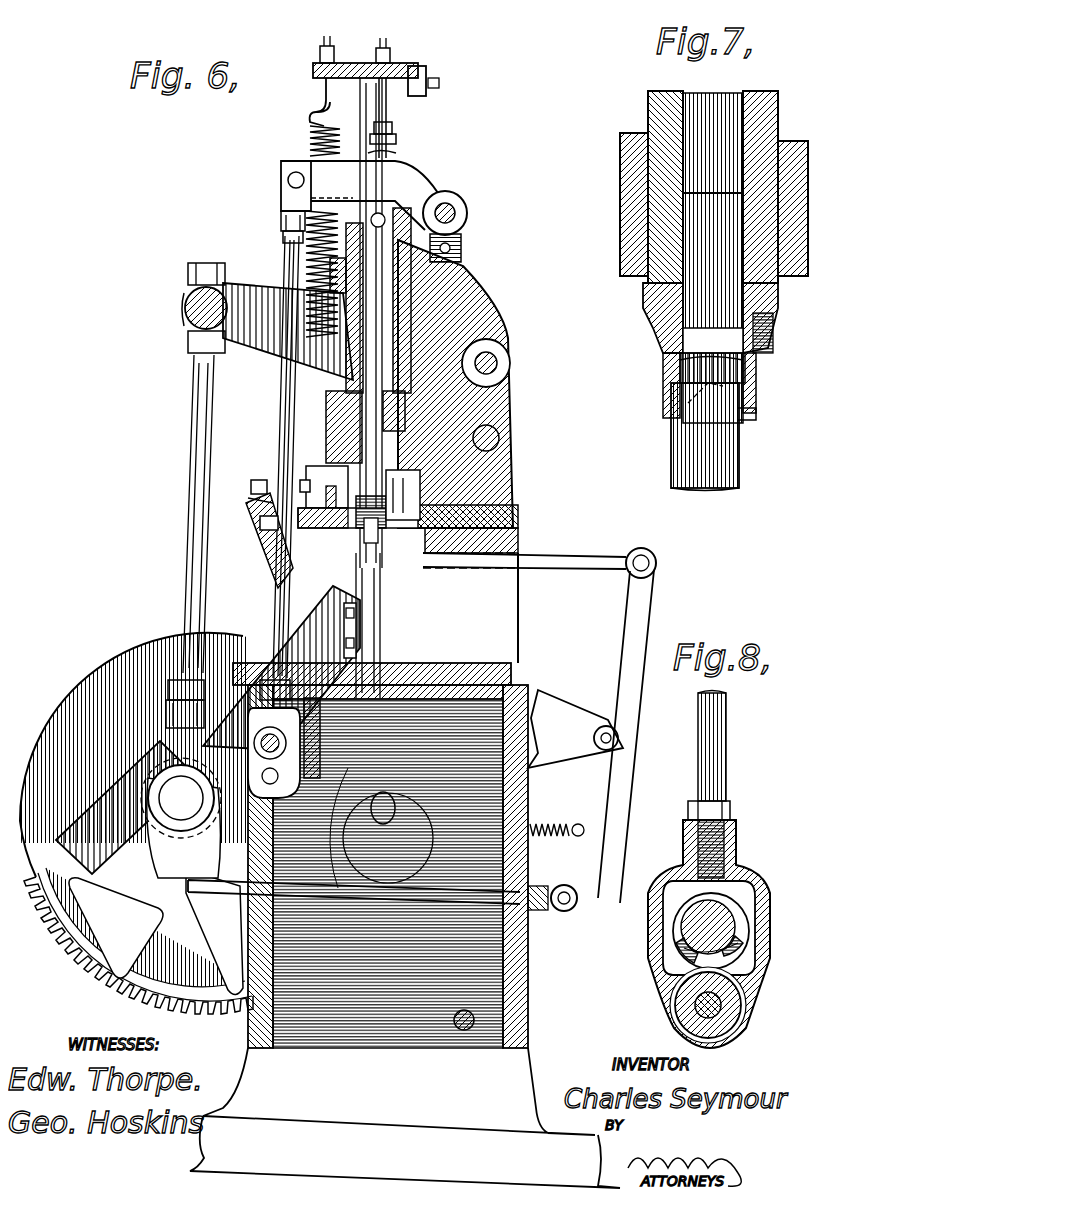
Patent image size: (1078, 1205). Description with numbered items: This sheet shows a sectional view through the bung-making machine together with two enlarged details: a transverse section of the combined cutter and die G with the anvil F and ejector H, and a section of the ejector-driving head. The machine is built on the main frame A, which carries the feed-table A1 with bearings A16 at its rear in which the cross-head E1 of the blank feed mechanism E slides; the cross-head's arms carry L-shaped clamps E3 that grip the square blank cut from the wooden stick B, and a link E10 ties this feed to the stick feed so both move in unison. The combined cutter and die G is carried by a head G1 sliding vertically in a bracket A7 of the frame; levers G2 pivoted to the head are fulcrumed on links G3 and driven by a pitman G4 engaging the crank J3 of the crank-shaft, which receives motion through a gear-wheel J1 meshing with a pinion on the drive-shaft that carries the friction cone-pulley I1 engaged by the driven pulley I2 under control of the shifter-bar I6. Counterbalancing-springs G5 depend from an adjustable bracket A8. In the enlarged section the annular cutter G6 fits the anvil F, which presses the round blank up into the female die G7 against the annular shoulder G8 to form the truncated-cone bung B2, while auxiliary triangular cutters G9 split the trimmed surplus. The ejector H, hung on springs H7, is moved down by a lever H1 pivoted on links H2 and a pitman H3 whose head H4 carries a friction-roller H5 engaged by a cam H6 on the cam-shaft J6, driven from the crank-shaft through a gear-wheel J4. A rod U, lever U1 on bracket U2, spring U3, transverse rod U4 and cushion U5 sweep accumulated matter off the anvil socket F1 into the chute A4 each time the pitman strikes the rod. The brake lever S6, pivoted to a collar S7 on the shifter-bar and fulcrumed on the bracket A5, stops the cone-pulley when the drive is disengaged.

In FIG. 6, the main frame A is at (405, 870).
In FIG. 6, the feed-table A1 is at (318, 512).
In FIG. 6, the chute A4 is at (256, 650).
In FIG. 6, the bracket A5 is at (457, 1023).
In FIG. 6, the bracket A7 is at (460, 335).
In FIG. 7, the bracket A7 is at (620, 192).
In FIG. 6, the bracket A8 is at (352, 45).
In FIG. 6, the bearings A16 is at (295, 474).
In FIG. 6, the wooden stick B is at (366, 539).
In FIG. 7, the bung B2 is at (672, 355).
In FIG. 6, the feed mechanism E is at (320, 488).
In FIG. 6, the cross-head E1 is at (318, 468).
In FIG. 6, the L-shaped clamps E3 is at (335, 525).
In FIG. 6, the link E10 is at (381, 822).
In FIG. 6, the anvil F is at (372, 560).
In FIG. 7, the anvil F is at (715, 462).
In FIG. 6, the socket F1 is at (350, 610).
In FIG. 6, the combined cutter and die G is at (320, 445).
In FIG. 7, the combined cutter and die G is at (658, 322).
In FIG. 6, the head G1 is at (403, 300).
In FIG. 7, the head G1 is at (648, 100).
In FIG. 6, the levers G2 is at (245, 350).
In FIG. 6, the links G3 is at (500, 380).
In FIG. 6, the pitman G4 is at (178, 520).
In FIG. 6, the counterbalancing-springs G5 is at (302, 130).
In FIG. 7, the annular cutter G6 is at (658, 385).
In FIG. 7, the female die G7 is at (740, 358).
In FIG. 7, the annular shoulder G8 is at (760, 338).
In FIG. 7, the auxiliary triangular cutters G9 is at (742, 408).
In FIG. 6, the ejector H is at (355, 378).
In FIG. 7, the ejector H is at (720, 88).
In FIG. 6, the lever H1 is at (400, 162).
In FIG. 6, the links H2 is at (453, 242).
In FIG. 6, the pitman H3 is at (277, 255).
In FIG. 8, the pitman H3 is at (720, 742).
In FIG. 6, the head H4 is at (274, 753).
In FIG. 8, the head H4 is at (732, 852).
In FIG. 8, the friction-roller H5 is at (728, 1008).
In FIG. 8, the cam H6 is at (665, 935).
In FIG. 6, the springs H7 is at (386, 128).
In FIG. 6, the friction cone-pulley I1 is at (570, 760).
In FIG. 6, the driven pulley I2 is at (530, 905).
In FIG. 6, the shifter-bar I6 is at (250, 514).
In FIG. 6, the gear-wheel J1 is at (40, 928).
In FIG. 6, the crank J3 is at (138, 809).
In FIG. 6, the gear-wheel J4 is at (140, 890).
In FIG. 8, the cam-shaft J6 is at (680, 905).
In FIG. 6, the lever S6 is at (268, 528).
In FIG. 6, the collar S7 is at (245, 488).
In FIG. 6, the rod U is at (575, 535).
In FIG. 6, the lever U1 is at (604, 642).
In FIG. 6, the bracket U2 is at (612, 732).
In FIG. 6, the spring U3 is at (570, 815).
In FIG. 6, the rod U4 is at (230, 896).
In FIG. 6, the cushion U5 is at (562, 900).